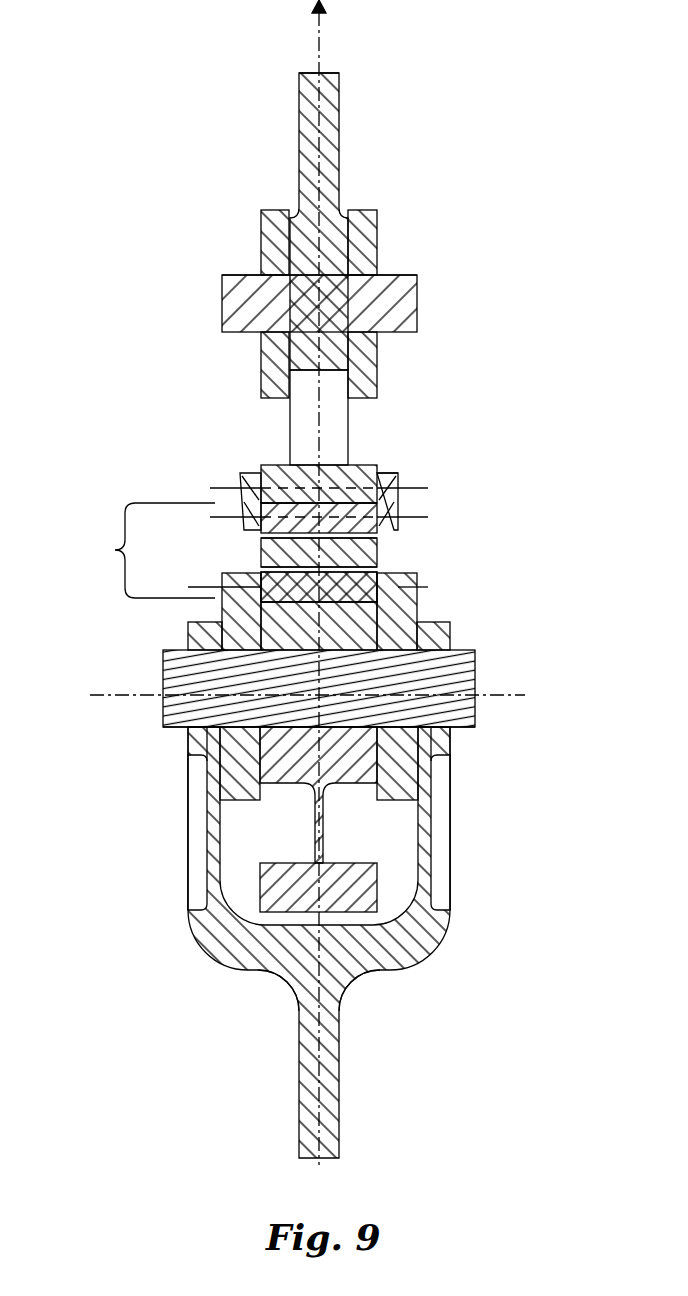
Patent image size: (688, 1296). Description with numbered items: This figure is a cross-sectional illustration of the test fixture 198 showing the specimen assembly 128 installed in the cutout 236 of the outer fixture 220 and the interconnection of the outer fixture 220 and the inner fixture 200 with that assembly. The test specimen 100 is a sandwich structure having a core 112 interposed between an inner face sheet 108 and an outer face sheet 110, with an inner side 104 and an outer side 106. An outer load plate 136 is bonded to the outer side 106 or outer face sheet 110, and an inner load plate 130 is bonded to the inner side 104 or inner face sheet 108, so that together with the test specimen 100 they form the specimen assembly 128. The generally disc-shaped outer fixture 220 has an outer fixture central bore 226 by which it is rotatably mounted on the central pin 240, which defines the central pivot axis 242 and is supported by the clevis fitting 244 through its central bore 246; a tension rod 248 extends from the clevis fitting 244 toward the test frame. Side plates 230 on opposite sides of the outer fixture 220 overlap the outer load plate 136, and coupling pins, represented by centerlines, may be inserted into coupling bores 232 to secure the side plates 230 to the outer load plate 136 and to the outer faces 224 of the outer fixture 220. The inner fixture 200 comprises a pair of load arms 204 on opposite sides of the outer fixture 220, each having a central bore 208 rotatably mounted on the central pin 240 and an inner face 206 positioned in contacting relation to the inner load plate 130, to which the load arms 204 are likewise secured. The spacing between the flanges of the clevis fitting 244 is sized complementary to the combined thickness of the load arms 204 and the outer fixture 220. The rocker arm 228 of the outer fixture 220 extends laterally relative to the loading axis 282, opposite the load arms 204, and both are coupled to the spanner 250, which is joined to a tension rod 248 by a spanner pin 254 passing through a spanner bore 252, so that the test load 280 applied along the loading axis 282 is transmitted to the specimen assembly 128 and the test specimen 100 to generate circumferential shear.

The test specimen 100 is at (411, 576).
The inner side 104 is at (383, 541).
The outer side 106 is at (380, 568).
The inner face sheet 108 is at (387, 535).
The outer face sheet 110 is at (378, 573).
The core 112 is at (273, 546).
The specimen assembly 128 is at (141, 550).
The inner load plate 130 is at (254, 497).
The outer load plate 136 is at (260, 573).
The test fixture 198 is at (196, 942).
The inner fixture 200 is at (403, 620).
The load arms 204 is at (247, 783).
The inner face 206 is at (275, 772).
The central bore 208 is at (222, 738).
The outer fixture 220 is at (450, 843).
The outer faces 224 is at (443, 900).
The outer fixture central bore 226 is at (475, 672).
The rocker arm 228 is at (270, 897).
The side plates 230 is at (390, 470).
The coupling bores 232 is at (243, 500).
The cutout 236 is at (273, 468).
The central pin 240 is at (478, 707).
The central pivot axis 242 is at (112, 697).
The clevis fitting 244 is at (395, 965).
The central bore 246 is at (196, 638).
The tension rod 248 is at (275, 615).
The spanner 250 is at (262, 220).
The spanner bore 252 is at (380, 275).
The spanner pin 254 is at (418, 301).
The test load 280 is at (321, 30).
The loading axis 282 is at (305, 86).